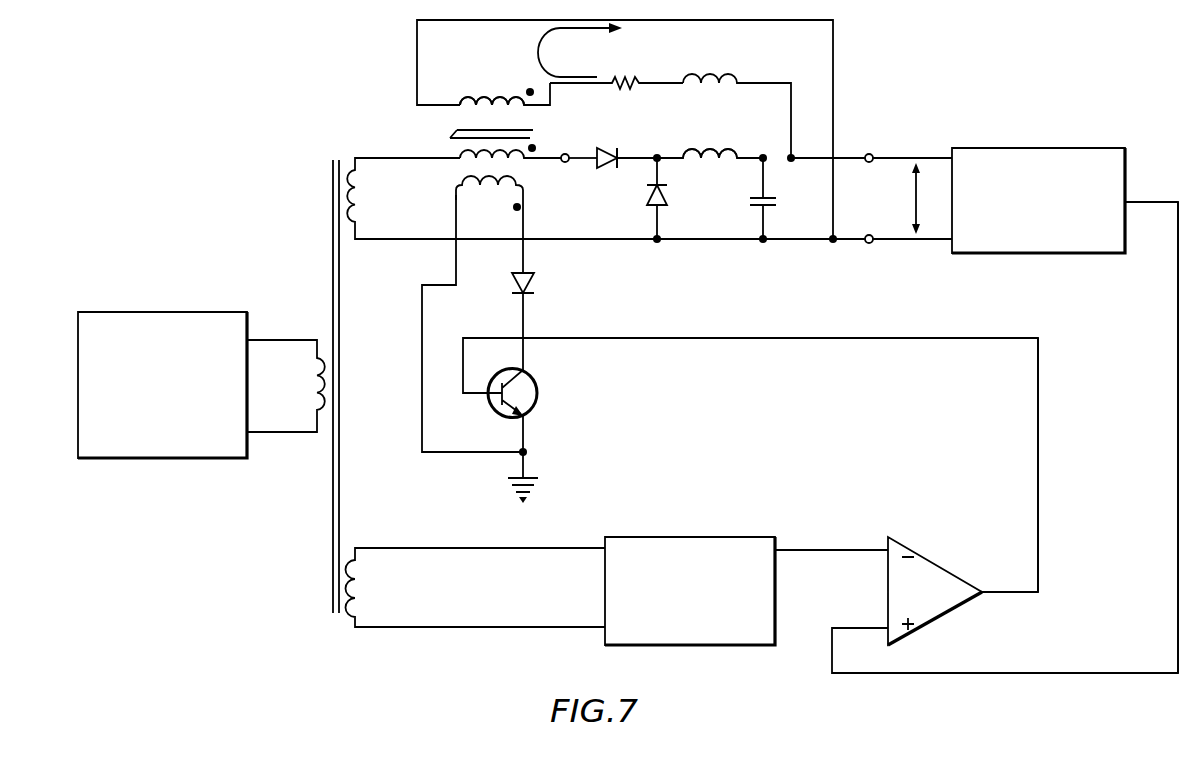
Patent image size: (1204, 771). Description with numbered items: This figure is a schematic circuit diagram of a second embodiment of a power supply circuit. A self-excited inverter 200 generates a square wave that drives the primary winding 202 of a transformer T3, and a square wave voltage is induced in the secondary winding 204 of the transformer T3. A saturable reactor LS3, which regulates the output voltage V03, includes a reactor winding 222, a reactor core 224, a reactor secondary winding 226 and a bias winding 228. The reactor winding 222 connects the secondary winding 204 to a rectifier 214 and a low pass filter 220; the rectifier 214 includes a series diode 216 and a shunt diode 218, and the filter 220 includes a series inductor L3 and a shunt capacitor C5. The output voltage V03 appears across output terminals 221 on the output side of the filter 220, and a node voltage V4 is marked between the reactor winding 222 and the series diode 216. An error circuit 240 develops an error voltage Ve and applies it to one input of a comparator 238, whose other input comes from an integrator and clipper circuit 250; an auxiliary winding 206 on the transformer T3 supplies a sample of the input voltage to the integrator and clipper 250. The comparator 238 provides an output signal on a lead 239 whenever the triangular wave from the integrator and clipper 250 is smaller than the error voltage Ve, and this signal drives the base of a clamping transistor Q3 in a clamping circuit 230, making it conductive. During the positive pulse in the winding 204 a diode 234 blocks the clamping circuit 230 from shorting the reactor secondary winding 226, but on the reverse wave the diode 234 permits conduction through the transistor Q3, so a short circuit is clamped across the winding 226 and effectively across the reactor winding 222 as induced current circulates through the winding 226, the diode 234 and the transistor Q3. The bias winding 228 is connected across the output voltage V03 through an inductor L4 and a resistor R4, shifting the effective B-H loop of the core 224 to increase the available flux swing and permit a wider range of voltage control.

The self-excited inverter 200 is at (172, 379).
The primary winding 202 is at (312, 386).
The secondary winding 204 is at (360, 203).
The auxiliary winding 206 is at (366, 598).
The rectifier 214 is at (648, 141).
The series diode 216 is at (610, 170).
The shunt diode 218 is at (647, 201).
The low pass filter 220 is at (737, 172).
The output terminals 221 is at (869, 154).
The reactor winding 222 is at (466, 158).
The reactor core 224 is at (533, 134).
The reactor secondary winding 226 is at (493, 197).
The bias winding 228 is at (492, 93).
The clamping circuit 230 is at (421, 340).
The diode 234 is at (536, 286).
The comparator 238 is at (925, 563).
The lead 239 is at (1038, 443).
The error circuit 240 is at (1008, 148).
The integrator and clipper circuit 250 is at (705, 538).
The clamping transistor Q3 is at (537, 388).
The series inductor L3 is at (716, 150).
The inductor L4 is at (730, 87).
The resistor R4 is at (628, 88).
The shunt capacitor C5 is at (776, 203).
The voltage node V4 is at (565, 163).
The output voltage V03 is at (913, 198).
The error voltage Ve is at (1178, 377).
The transformer T3 is at (318, 580).
The saturable reactor LS3 is at (469, 96).